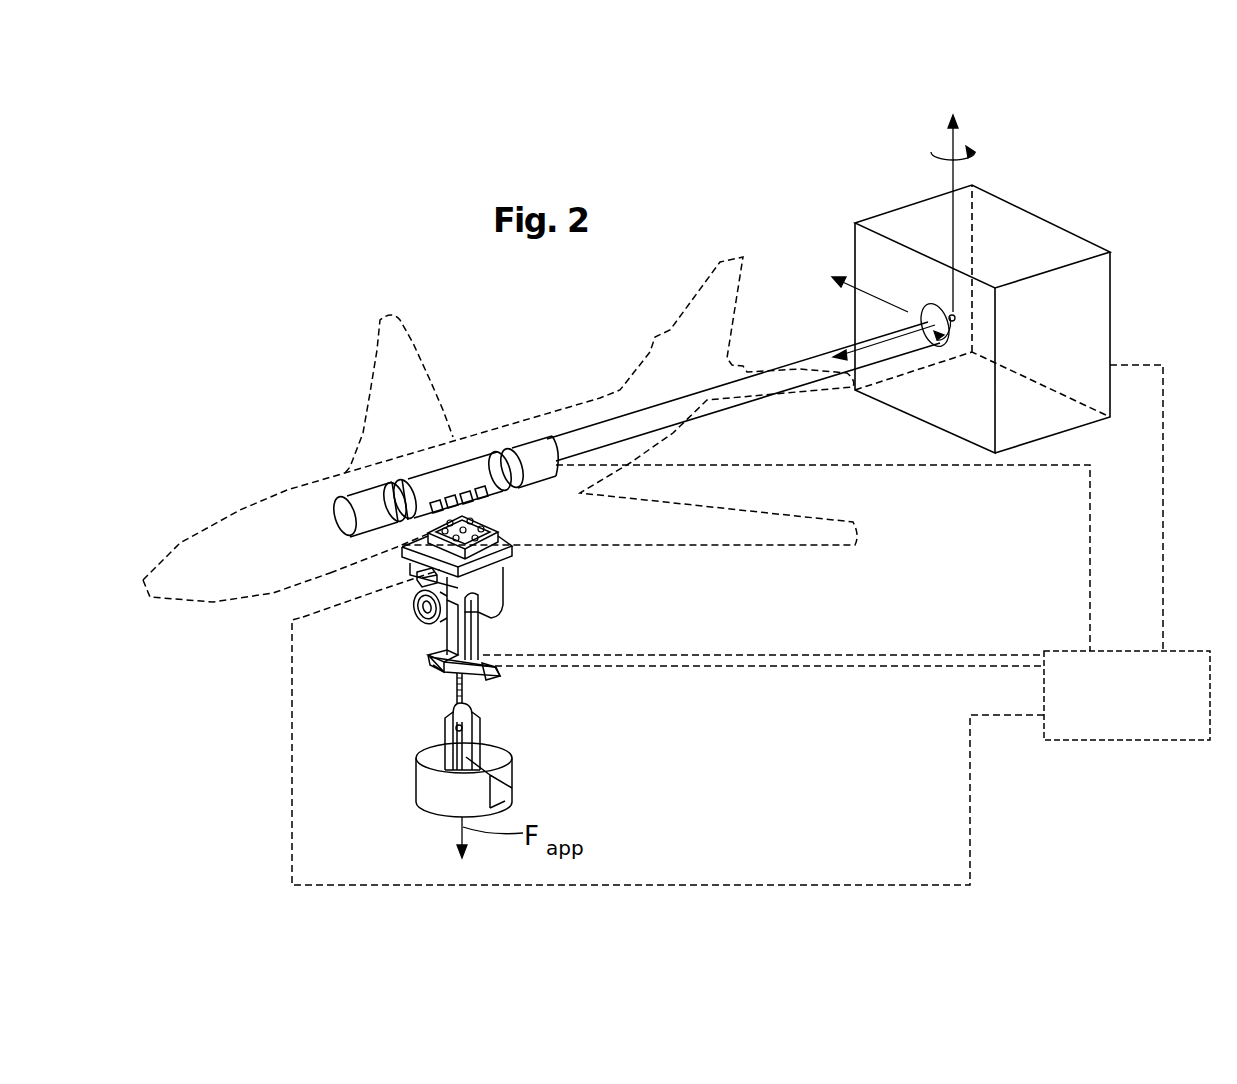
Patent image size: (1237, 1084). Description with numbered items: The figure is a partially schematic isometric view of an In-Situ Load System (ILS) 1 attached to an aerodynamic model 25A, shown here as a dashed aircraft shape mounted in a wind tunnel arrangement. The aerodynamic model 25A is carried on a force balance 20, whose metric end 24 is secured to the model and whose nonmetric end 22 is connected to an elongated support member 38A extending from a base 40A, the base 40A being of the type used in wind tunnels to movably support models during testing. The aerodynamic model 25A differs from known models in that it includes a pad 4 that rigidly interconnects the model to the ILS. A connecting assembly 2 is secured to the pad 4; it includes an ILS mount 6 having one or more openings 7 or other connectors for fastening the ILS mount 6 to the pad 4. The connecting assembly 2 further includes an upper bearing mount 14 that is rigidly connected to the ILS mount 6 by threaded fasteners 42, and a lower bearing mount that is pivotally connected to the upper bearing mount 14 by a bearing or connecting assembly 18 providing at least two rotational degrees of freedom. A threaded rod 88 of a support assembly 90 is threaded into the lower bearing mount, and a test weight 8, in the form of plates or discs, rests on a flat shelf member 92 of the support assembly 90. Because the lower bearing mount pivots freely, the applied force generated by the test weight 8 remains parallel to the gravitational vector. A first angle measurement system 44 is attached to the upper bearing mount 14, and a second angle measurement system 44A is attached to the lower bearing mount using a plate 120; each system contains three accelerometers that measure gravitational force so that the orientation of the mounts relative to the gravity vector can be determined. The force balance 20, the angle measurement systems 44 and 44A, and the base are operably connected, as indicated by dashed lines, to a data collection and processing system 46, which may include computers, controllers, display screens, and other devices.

The In-Situ Load System (ILS) 1 is at (443, 667).
The connecting assembly 2 is at (503, 610).
The pad 4 is at (383, 552).
The ILS mount 6 is at (505, 548).
The openings 7 is at (477, 520).
The test weight 8 is at (507, 752).
The upper bearing mount 14 is at (503, 577).
The bearing or connecting assembly 18 is at (420, 622).
The force balance 20 is at (470, 447).
The nonmetric end 22 is at (543, 437).
The metric end 24 is at (343, 497).
The aerodynamic model 25A is at (288, 487).
The elongated support member 38A is at (797, 363).
The base 40A is at (1045, 218).
The threaded fasteners 42 is at (430, 543).
The first angle measurement system 44 is at (420, 580).
The second angle measurement system 44A is at (437, 653).
The data collection and processing system 46 is at (1150, 740).
The threaded rod 88 is at (468, 685).
The support assembly 90 is at (452, 720).
The flat shelf member 92 is at (430, 812).
The plate 120 is at (452, 672).